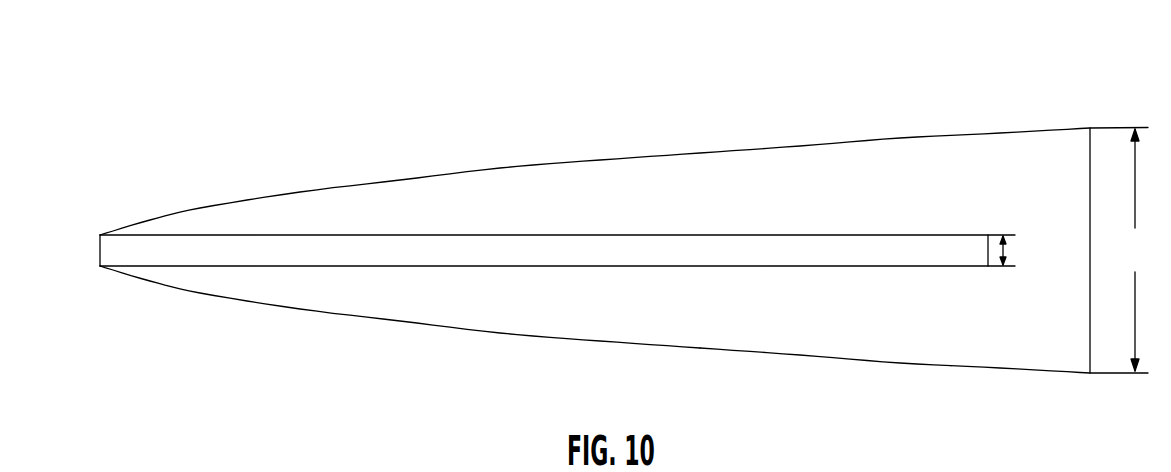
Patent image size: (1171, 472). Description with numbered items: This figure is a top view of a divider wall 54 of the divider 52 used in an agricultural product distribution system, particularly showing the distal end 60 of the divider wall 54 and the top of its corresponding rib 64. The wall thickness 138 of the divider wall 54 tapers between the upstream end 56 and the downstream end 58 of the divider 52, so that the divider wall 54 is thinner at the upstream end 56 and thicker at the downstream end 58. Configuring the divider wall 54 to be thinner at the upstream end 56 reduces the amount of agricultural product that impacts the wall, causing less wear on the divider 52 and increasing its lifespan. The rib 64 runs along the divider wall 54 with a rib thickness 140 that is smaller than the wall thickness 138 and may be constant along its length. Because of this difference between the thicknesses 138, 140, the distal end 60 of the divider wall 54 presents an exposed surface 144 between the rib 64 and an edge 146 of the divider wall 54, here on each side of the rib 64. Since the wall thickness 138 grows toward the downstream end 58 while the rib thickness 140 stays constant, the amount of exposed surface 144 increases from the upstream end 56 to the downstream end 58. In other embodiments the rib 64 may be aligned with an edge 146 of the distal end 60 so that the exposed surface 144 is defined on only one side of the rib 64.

The divider 52 is at (437, 96).
The divider wall 54 is at (646, 66).
The upstream end 56 is at (101, 209).
The downstream end 58 is at (1043, 100).
The distal end 60 is at (562, 305).
The rib 64 is at (233, 248).
The wall thickness 138 is at (1133, 250).
The rib thickness 140 is at (1008, 250).
The exposed surface 144 is at (805, 332).
The edge 146 is at (947, 362).